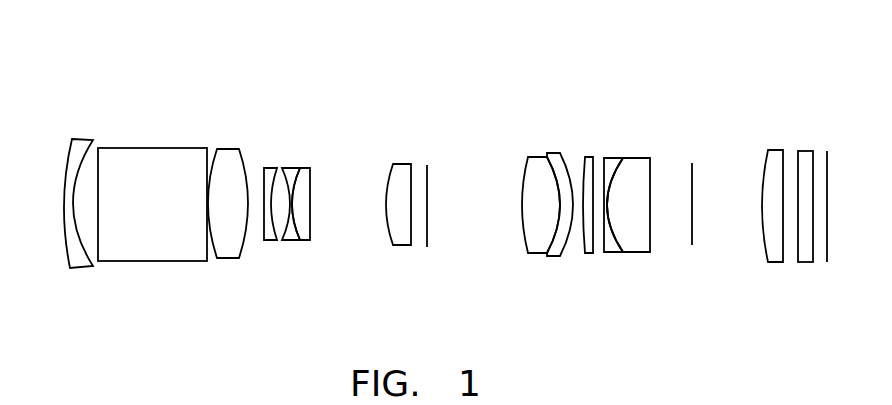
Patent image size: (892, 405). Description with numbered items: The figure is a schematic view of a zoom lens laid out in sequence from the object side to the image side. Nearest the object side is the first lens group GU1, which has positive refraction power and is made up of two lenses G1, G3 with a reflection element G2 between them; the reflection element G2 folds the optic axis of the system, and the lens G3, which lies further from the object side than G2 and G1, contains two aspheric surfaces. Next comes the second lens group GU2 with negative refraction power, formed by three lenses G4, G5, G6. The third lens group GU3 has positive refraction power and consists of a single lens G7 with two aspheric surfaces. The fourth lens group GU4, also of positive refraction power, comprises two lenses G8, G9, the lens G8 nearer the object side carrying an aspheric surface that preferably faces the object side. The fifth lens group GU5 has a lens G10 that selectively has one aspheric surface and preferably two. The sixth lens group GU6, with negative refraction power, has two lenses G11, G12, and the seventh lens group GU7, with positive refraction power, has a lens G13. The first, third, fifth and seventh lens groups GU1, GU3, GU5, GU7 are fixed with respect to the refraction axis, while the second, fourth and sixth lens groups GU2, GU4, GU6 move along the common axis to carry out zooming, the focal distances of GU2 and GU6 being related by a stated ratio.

The first lens group GU1 is at (57, 73).
The second lens group GU2 is at (342, 73).
The third lens group GU3 is at (422, 73).
The fourth lens group GU4 is at (477, 73).
The fifth lens group GU5 is at (625, 73).
The sixth lens group GU6 is at (657, 73).
The seventh lens group GU7 is at (827, 73).
The lens G1 is at (80, 145).
The reflection element G2 is at (152, 157).
The lens G3 is at (230, 158).
The lens G4 is at (269, 178).
The lens G5 is at (290, 178).
The lens G6 is at (303, 178).
The lens G7 is at (399, 180).
The lens G8 is at (533, 175).
The lens G9 is at (557, 165).
The lens G10 is at (592, 150).
The lens G11 is at (615, 165).
The lens G12 is at (638, 172).
The lens G13 is at (777, 162).